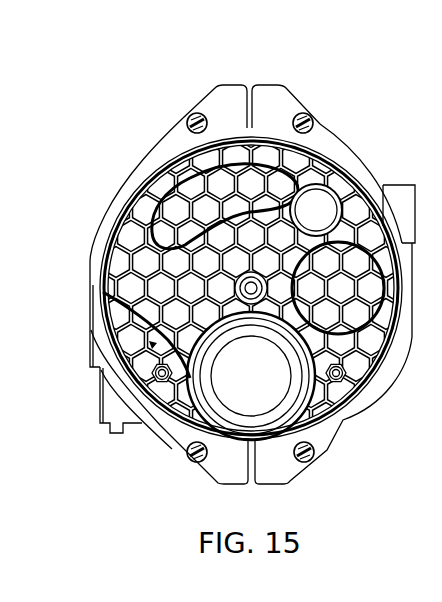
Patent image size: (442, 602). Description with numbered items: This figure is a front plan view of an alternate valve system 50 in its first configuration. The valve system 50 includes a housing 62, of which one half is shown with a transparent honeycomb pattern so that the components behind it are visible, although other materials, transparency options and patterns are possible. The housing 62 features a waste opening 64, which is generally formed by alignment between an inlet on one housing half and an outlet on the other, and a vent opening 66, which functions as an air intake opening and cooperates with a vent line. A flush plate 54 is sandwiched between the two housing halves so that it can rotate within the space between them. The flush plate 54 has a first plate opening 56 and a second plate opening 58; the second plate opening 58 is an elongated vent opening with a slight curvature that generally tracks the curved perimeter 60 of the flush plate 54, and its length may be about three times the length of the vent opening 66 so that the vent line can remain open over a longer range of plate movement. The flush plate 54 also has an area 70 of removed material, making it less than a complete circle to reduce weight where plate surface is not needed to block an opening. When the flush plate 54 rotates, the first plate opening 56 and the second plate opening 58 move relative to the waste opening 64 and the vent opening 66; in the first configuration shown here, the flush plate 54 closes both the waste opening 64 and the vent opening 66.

The valve system 50 is at (312, 78).
The flush plate 54 is at (104, 292).
The first plate opening 56 is at (399, 243).
The second plate opening 58 is at (186, 163).
The curved perimeter 60 is at (150, 177).
The housing 62 is at (333, 424).
The waste opening 64 is at (310, 428).
The vent opening 66 is at (320, 203).
The area of removed material 70 is at (104, 404).